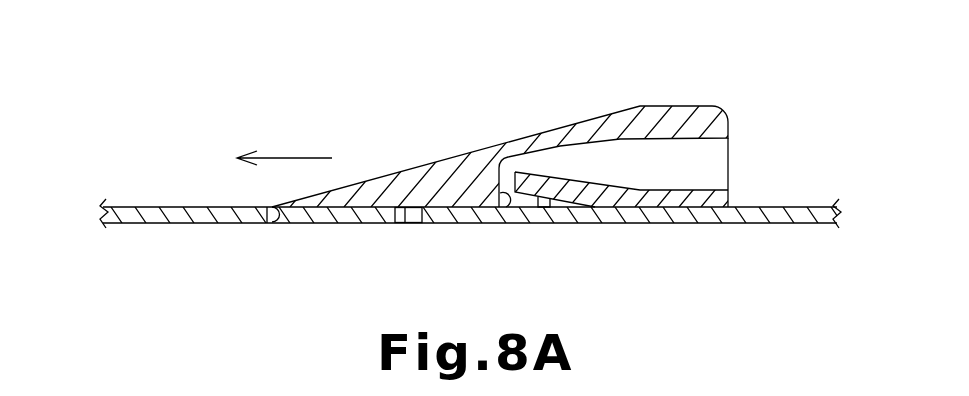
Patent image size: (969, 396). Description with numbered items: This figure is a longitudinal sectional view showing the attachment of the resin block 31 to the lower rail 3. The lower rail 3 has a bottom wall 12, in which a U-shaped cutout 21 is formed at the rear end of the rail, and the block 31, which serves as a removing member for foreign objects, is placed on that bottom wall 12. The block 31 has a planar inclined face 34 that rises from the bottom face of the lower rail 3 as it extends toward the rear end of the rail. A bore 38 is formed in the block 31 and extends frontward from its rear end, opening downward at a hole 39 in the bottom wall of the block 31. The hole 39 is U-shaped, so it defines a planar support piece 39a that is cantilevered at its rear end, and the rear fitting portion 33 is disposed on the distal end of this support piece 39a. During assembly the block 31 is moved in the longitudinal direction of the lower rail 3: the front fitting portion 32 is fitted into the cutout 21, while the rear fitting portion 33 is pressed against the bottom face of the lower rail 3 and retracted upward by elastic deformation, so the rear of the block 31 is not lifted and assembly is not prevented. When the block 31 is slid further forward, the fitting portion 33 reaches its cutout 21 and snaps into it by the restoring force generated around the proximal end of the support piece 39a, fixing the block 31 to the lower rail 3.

The lower rail 3 is at (464, 186).
The bottom wall 12 is at (150, 207).
The cutout 21 is at (278, 224).
The fitting portion 32 is at (410, 224).
The block 31 is at (494, 140).
The inclined face 34 is at (447, 158).
The bore 38 is at (728, 138).
The support piece 39a is at (602, 223).
The fitting portion 33 is at (542, 223).
The hole 39 is at (502, 223).